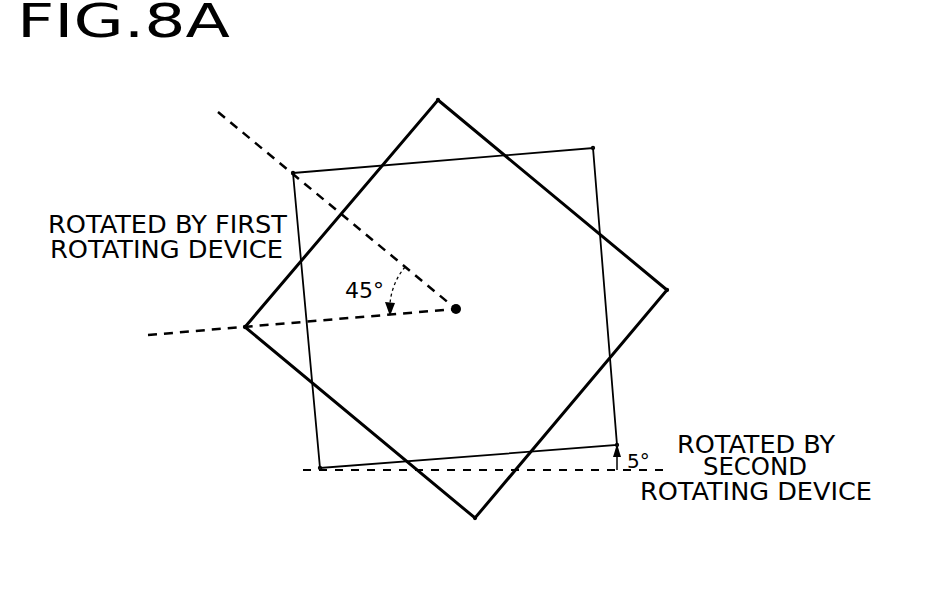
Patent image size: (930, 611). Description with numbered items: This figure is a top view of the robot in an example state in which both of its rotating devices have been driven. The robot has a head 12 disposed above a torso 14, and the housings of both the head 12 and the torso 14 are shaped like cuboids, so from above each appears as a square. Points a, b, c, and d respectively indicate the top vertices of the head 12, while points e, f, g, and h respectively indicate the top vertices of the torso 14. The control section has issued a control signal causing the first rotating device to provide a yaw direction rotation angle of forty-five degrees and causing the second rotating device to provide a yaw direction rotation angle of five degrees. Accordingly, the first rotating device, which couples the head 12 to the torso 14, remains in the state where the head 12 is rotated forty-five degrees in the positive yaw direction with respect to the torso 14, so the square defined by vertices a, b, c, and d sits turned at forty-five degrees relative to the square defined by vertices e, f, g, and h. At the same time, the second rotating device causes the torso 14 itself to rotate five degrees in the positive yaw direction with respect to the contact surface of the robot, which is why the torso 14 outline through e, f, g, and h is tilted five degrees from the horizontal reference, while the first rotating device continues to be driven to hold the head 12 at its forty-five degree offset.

The head 12 is at (463, 128).
The torso 14 is at (580, 188).
The top vertex of the head a is at (244, 329).
The top vertex of the head b is at (476, 520).
The top vertex of the head c is at (669, 291).
The top vertex of the head d is at (438, 98).
The top vertex of the torso e is at (293, 171).
The top vertex of the torso f is at (318, 468).
The top vertex of the torso g is at (617, 443).
The top vertex of the torso h is at (595, 148).